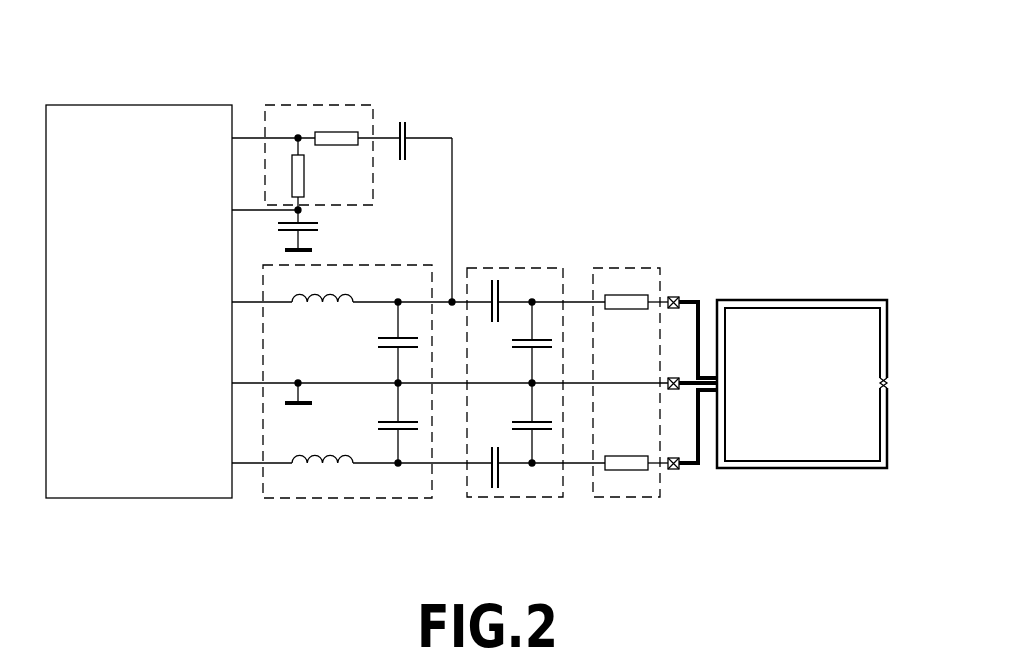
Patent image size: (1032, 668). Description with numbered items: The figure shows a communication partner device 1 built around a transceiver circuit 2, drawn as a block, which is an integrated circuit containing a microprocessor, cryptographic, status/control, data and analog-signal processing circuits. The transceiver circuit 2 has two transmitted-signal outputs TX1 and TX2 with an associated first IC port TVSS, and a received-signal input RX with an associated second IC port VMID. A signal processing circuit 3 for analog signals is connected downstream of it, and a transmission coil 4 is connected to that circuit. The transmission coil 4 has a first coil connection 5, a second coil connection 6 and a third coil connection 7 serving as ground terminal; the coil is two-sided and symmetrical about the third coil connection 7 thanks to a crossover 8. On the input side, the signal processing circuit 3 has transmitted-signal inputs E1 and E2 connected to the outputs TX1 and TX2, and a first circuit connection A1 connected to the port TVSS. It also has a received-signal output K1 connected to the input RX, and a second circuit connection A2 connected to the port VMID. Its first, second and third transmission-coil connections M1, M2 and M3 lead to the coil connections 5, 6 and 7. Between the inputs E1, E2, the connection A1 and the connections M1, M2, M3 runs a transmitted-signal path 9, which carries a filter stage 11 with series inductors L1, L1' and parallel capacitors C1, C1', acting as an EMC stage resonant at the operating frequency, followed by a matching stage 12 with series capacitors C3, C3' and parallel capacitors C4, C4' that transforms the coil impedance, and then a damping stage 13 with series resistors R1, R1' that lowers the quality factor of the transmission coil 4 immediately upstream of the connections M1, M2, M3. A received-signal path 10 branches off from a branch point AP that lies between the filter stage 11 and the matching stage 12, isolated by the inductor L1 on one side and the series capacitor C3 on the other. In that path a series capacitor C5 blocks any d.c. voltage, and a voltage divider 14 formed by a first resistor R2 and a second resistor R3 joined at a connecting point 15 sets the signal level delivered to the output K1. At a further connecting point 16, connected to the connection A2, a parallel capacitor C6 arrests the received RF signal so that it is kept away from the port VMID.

The communication partner device 1 is at (785, 190).
The transceiver circuit 2 is at (101, 102).
The signal processing circuit 3 is at (542, 177).
The transmission coil 4 is at (796, 297).
The first coil connection 5 is at (700, 298).
The second coil connection 6 is at (693, 468).
The third coil connection 7 is at (703, 388).
The crossover 8 is at (880, 385).
The transmitted-signal path 9 is at (620, 256).
The received-signal path 10 is at (452, 133).
The filter stage 11 is at (380, 503).
The matching stage 12 is at (510, 503).
The damping stage 13 is at (617, 503).
The voltage divider 14 is at (352, 103).
The connecting point 15 is at (298, 136).
The further connecting point 16 is at (300, 212).
The received-signal input RX is at (232, 138).
The second IC port VMID is at (232, 210).
The second circuit connection A2 is at (232, 216).
The received-signal output K1 is at (236, 138).
The first transmitted-signal input E1 is at (240, 300).
The second transmitted-signal input E2 is at (238, 468).
The first transmitted-signal output TX1 is at (232, 302).
The second transmitted-signal output TX2 is at (232, 463).
The first IC port TVSS is at (232, 383).
The first circuit connection A1 is at (232, 390).
The branch point AP is at (452, 300).
The series capacitor C5 is at (405, 125).
The parallel capacitor C6 is at (318, 229).
The first resistor R2 is at (328, 132).
The second resistor R3 is at (304, 178).
The series inductor L1 is at (317, 316).
The series inductor L1' is at (317, 441).
The parallel capacitor C1 is at (375, 353).
The parallel capacitor C1' is at (375, 409).
The series capacitor C3 is at (527, 279).
The series capacitor C3' is at (469, 491).
The parallel capacitor C4 is at (515, 359).
The parallel capacitor C4' is at (515, 411).
The series resistor R1 is at (624, 322).
The series resistor R1' is at (624, 436).
The first transmission-coil connection M1 is at (673, 296).
The second transmission-coil connection M2 is at (668, 380).
The third transmission-coil connection M3 is at (673, 470).